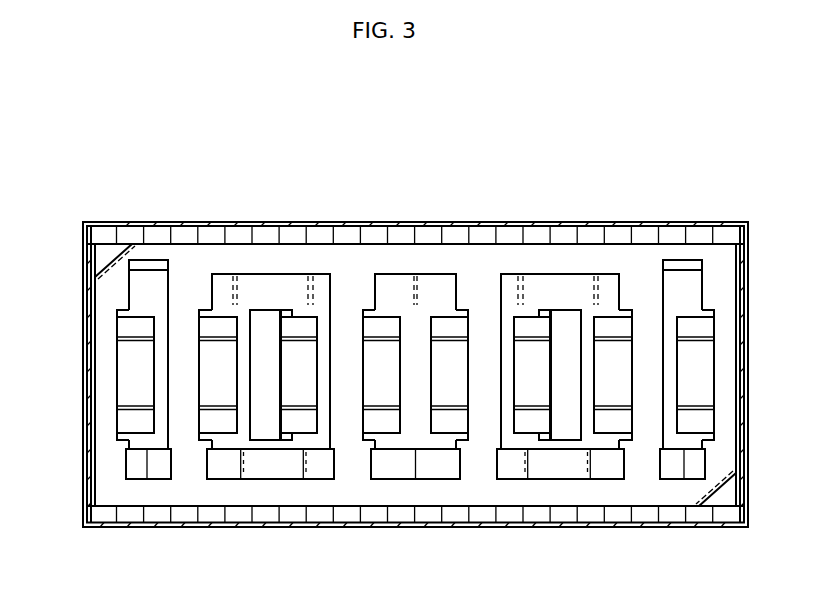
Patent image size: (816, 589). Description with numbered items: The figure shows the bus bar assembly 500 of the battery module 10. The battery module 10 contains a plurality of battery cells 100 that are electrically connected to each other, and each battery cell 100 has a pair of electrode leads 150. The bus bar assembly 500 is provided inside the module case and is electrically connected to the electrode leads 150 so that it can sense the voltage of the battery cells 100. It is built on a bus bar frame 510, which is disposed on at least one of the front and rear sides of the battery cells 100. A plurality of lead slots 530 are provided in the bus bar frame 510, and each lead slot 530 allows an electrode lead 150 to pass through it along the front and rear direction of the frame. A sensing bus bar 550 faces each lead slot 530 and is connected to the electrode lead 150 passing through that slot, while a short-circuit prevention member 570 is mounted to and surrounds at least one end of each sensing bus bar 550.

The battery module 10 is at (384, 326).
The battery cell 100 is at (624, 214).
The electrode lead 150 is at (527, 327).
The bus bar assembly 500 is at (384, 373).
The bus bar frame 510 is at (540, 492).
The lead slot 530 is at (206, 312).
The sensing bus bar 550 is at (272, 292).
The short-circuit prevention member 570 is at (271, 467).